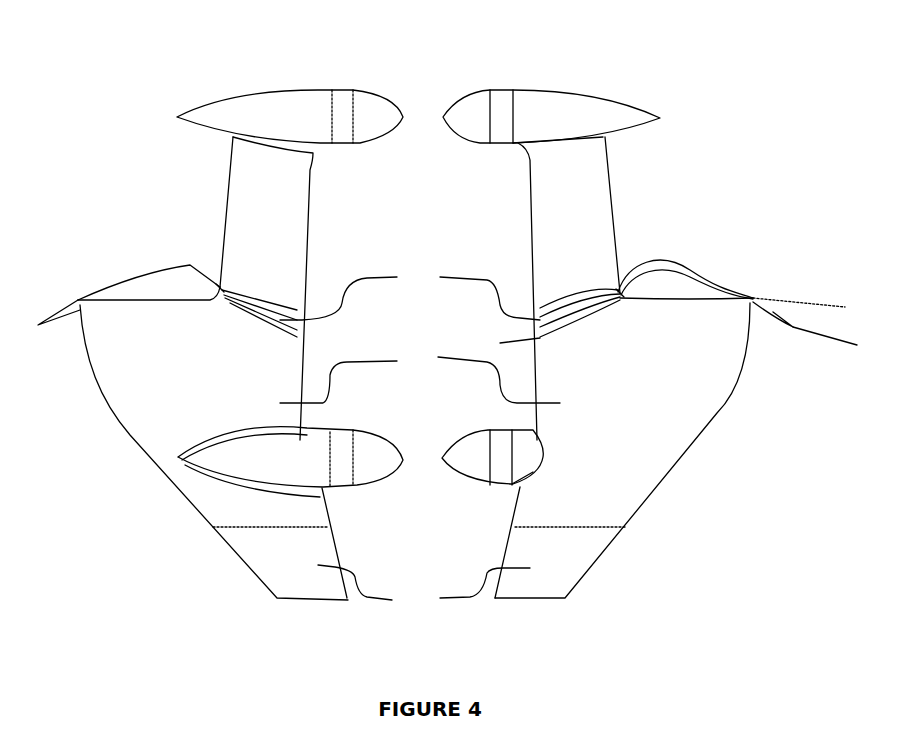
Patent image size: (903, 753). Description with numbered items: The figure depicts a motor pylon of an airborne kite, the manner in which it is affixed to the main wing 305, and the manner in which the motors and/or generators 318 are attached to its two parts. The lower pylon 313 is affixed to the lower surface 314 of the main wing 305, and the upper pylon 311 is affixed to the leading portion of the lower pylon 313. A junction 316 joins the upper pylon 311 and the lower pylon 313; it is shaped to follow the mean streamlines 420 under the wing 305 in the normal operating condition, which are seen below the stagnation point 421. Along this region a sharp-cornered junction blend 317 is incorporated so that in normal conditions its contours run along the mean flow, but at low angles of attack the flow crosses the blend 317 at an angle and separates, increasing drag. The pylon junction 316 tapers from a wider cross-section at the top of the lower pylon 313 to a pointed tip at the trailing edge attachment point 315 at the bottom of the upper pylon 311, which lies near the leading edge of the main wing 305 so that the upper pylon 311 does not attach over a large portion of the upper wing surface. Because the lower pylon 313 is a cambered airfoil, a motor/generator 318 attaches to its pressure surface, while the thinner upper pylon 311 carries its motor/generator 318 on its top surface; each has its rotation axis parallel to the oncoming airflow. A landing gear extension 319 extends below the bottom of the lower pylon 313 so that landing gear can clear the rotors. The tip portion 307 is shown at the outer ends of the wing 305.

The main wing 305 is at (130, 283).
The tip portion 307 is at (60, 337).
The upper pylon 311 is at (248, 220).
The lower pylon 313 is at (420, 371).
The lower surface 314 is at (133, 307).
The trailing edge attachment point 315 is at (220, 285).
The junction 316 is at (410, 292).
The junction blend 317 is at (222, 310).
The motor/generator 318 is at (503, 118).
The landing gear extension 319 is at (424, 582).
The mean streamlines 420 is at (798, 347).
The stagnation point 421 is at (220, 290).